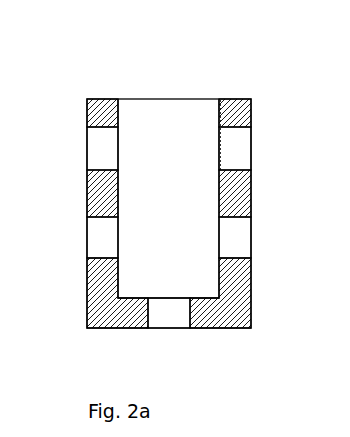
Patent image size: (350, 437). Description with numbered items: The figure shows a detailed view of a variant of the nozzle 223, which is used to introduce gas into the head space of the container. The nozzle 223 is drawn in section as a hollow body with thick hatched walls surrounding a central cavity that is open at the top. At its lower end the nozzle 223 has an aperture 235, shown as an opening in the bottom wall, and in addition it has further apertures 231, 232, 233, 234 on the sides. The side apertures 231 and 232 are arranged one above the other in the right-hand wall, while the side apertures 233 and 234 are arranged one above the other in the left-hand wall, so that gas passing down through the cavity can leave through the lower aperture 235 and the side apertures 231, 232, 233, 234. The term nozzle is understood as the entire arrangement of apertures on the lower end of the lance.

The nozzle 223 is at (148, 79).
The side aperture 231 is at (234, 152).
The side aperture 232 is at (234, 245).
The side aperture 233 is at (103, 152).
The side aperture 234 is at (103, 245).
The lower end aperture 235 is at (172, 313).